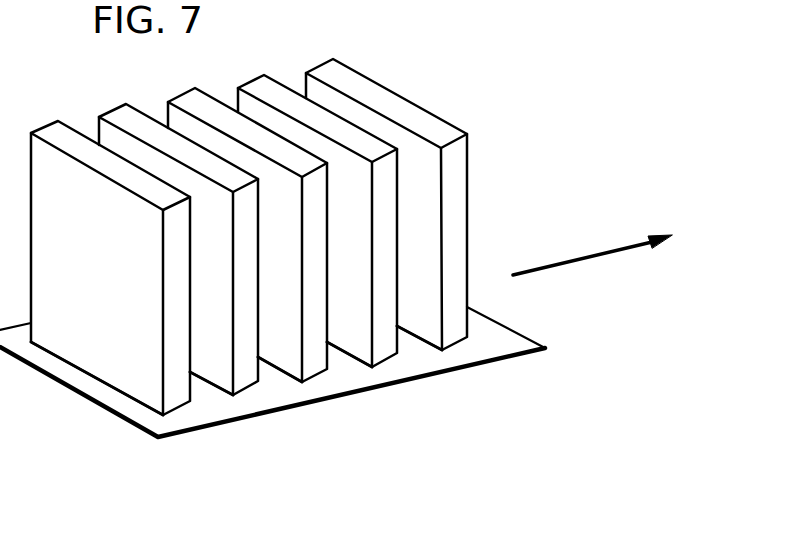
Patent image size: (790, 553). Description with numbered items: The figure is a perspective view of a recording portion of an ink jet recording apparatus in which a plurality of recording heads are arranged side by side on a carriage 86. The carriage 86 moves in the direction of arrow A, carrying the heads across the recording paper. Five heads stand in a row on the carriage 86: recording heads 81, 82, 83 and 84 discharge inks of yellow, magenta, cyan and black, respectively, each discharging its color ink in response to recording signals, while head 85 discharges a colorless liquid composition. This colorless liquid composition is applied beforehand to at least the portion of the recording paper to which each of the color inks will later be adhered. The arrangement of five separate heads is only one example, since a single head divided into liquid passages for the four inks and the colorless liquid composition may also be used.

The recording head 81 is at (182, 402).
The recording head 82 is at (247, 383).
The recording head 83 is at (318, 370).
The recording head 84 is at (392, 355).
The head 85 is at (460, 342).
The carriage 86 is at (137, 415).
The arrow A is at (607, 253).